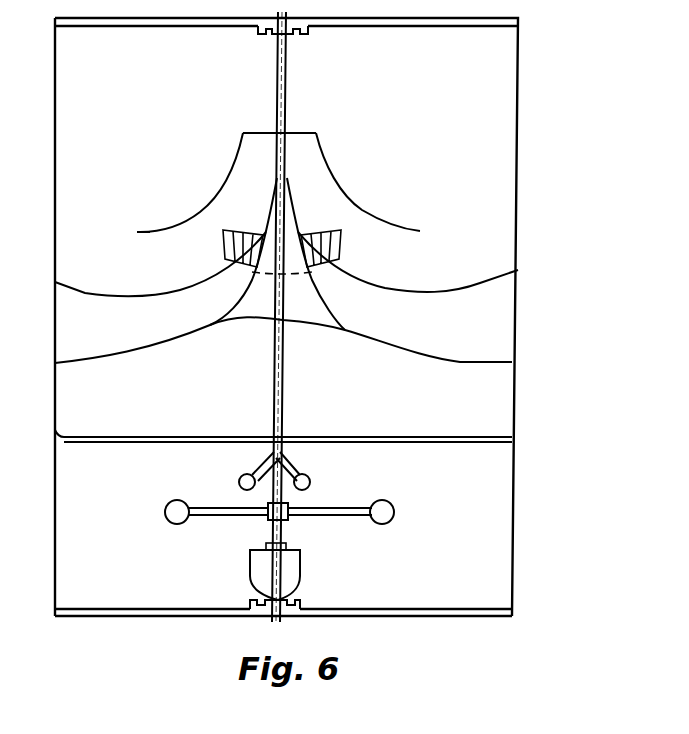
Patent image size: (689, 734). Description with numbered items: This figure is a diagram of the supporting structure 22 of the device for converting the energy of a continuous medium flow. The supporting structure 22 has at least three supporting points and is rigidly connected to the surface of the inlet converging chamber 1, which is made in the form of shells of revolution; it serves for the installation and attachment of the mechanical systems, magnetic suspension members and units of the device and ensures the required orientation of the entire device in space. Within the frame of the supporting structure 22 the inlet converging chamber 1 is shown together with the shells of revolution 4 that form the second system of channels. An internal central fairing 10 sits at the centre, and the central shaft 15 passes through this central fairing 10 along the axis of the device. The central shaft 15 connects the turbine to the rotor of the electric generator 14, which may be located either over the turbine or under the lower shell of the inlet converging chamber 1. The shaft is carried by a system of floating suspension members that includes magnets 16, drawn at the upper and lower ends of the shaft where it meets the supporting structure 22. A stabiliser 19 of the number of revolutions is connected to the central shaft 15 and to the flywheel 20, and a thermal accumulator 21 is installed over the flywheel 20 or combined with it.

The inlet converging chamber 1 is at (80, 290).
The shells of revolution 4 is at (145, 233).
The internal central fairing 10 is at (328, 307).
The electric generator 14 is at (302, 567).
The central shaft 15 is at (271, 381).
The magnets 16 is at (250, 600).
The stabiliser of the number of revolutions 19 is at (308, 478).
The flywheel 20 is at (169, 506).
The thermal accumulator 21 is at (137, 437).
The supporting structure 22 is at (516, 557).